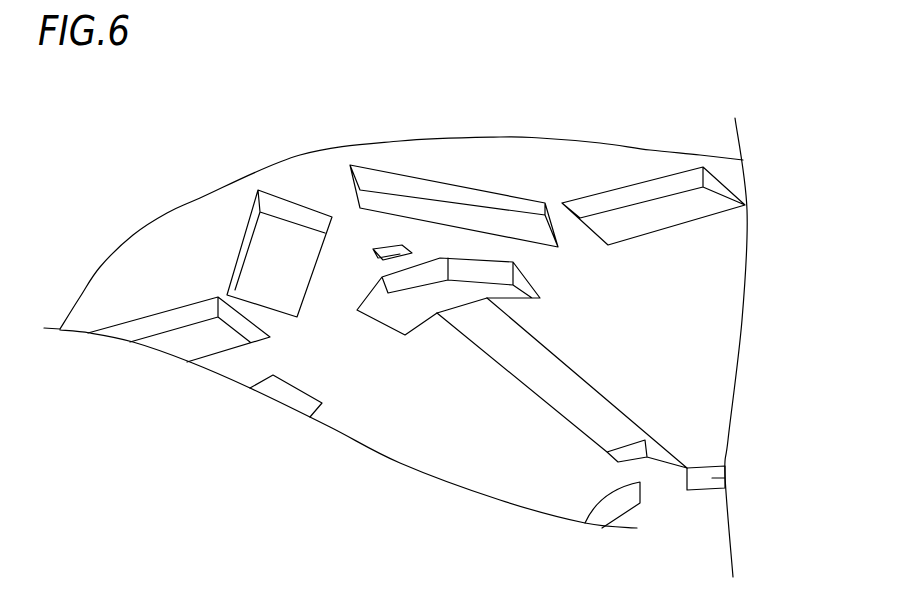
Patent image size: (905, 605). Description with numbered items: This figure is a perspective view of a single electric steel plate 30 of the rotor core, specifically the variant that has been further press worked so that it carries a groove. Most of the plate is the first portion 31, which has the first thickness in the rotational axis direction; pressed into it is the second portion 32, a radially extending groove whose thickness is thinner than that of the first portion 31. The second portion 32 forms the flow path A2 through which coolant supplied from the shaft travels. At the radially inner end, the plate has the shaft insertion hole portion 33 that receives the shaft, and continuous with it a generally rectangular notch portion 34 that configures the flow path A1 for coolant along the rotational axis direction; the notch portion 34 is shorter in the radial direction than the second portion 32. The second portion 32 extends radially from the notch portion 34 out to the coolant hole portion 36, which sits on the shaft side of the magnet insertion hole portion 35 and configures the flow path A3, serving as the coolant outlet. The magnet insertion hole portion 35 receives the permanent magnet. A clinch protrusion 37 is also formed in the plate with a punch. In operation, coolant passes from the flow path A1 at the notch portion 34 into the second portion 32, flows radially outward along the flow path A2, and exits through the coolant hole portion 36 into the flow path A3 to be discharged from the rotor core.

The electric steel plate 30 is at (340, 116).
The first portion 31 is at (697, 358).
The second portion 32 is at (565, 397).
The shaft insertion hole portion 33 is at (727, 482).
The notch portion 34 is at (667, 467).
The magnet insertion hole portion 35 is at (638, 195).
The coolant hole portion 36 is at (527, 267).
The clinch protrusion 37 is at (373, 249).
The flow path A1 is at (655, 491).
The flow path A2 is at (514, 345).
The flow path A3 is at (392, 317).